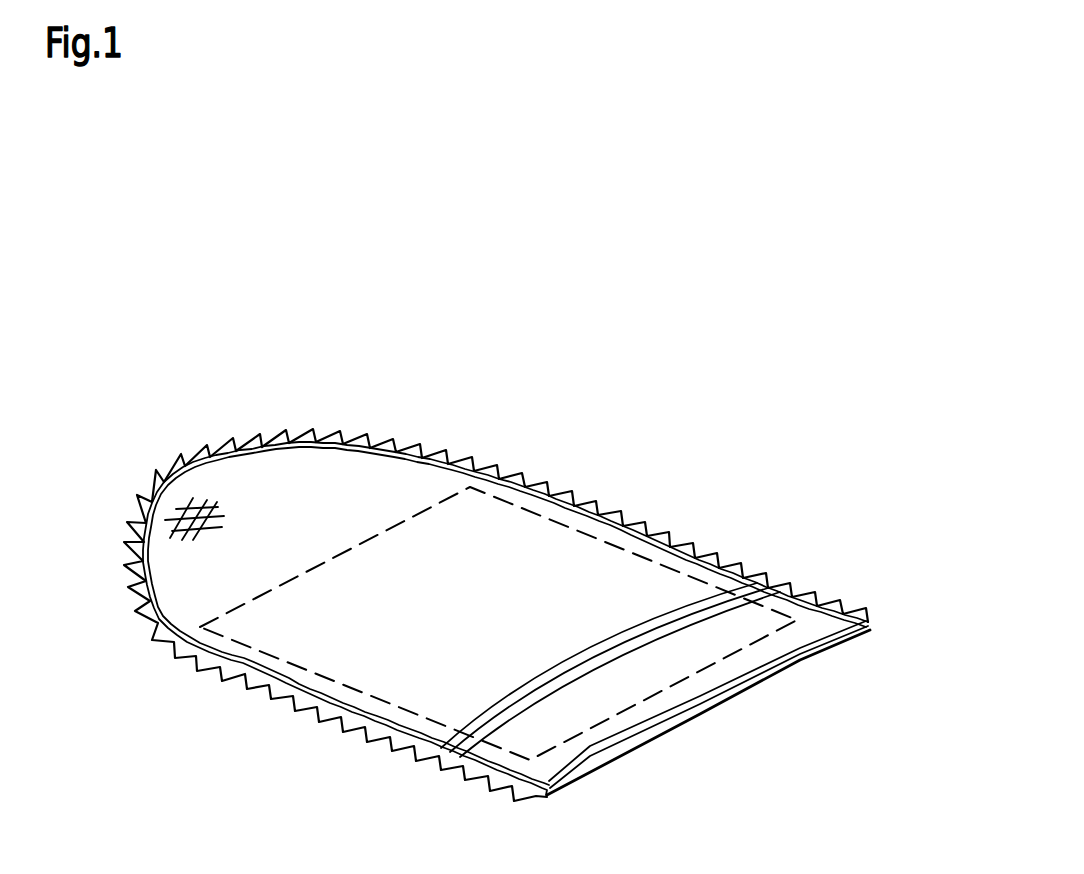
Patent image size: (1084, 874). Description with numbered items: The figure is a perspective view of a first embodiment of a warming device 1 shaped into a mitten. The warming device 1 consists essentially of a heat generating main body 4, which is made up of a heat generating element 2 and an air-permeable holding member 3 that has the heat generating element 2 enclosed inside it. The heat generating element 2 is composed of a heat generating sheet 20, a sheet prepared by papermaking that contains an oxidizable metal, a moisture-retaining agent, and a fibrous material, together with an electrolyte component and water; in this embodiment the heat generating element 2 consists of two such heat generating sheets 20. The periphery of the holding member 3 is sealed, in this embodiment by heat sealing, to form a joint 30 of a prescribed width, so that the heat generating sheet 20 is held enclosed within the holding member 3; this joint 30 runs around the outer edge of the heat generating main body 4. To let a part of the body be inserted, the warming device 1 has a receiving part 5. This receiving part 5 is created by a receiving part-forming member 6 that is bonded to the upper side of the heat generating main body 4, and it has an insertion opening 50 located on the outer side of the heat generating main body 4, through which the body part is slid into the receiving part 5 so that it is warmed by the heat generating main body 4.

The warming device 1 is at (543, 423).
The heat generating element 2 is at (636, 553).
The heat generating sheet 20 is at (505, 579).
The air-permeable holding member 3 is at (802, 620).
The heat generating main body 4 is at (733, 398).
The receiving part 5 is at (593, 620).
The insertion opening 50 is at (630, 657).
The receiving part-forming member 6 is at (550, 653).
The joint 30 is at (306, 698).